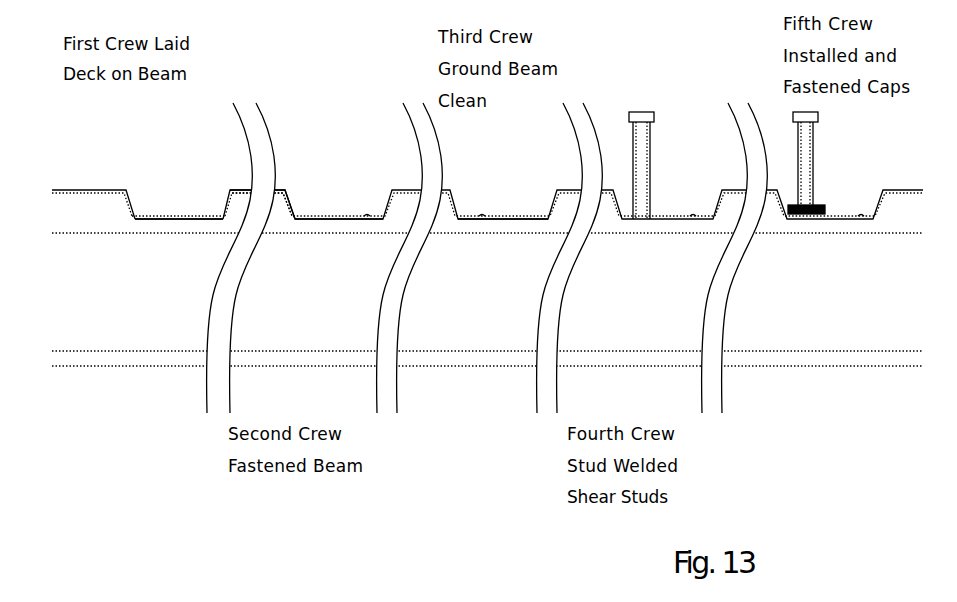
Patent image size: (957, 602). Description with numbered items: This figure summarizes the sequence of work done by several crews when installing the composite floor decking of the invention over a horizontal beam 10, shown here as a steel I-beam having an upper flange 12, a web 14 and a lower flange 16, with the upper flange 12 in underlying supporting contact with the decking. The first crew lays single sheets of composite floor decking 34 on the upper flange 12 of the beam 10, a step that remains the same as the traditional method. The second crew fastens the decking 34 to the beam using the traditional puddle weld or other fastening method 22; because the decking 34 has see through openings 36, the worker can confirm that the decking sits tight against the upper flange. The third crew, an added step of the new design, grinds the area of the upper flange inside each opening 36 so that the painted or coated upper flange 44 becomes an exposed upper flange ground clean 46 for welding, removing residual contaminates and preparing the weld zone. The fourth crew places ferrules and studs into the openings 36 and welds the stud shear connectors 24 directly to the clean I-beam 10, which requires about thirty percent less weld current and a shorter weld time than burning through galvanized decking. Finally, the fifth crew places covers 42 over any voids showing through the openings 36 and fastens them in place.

The horizontal beam 10 is at (68, 295).
The upper flange of beam 12 is at (184, 218).
The web of beam 14 is at (333, 313).
The lower flange of beam 16 is at (66, 359).
The puddle weld fastening 22 is at (362, 205).
The stud shear connector 24 is at (656, 157).
The composite floor decking 34 is at (231, 182).
The see through openings 36 is at (150, 208).
The covers for openings 42 is at (829, 179).
The painted or coated upper flange 44 is at (75, 211).
The ground clean exposed upper flange 46 is at (478, 203).